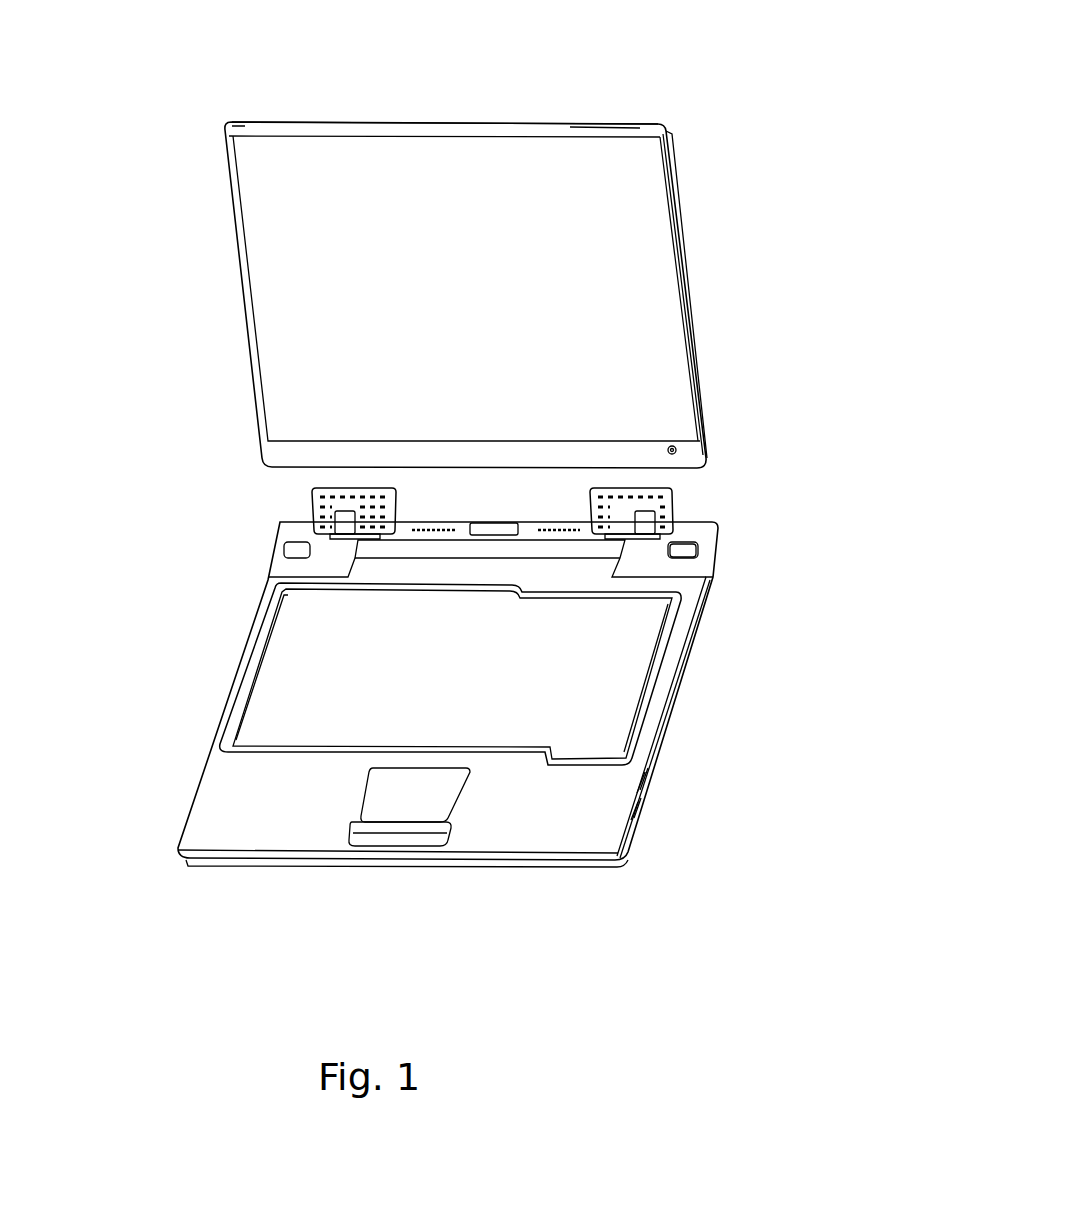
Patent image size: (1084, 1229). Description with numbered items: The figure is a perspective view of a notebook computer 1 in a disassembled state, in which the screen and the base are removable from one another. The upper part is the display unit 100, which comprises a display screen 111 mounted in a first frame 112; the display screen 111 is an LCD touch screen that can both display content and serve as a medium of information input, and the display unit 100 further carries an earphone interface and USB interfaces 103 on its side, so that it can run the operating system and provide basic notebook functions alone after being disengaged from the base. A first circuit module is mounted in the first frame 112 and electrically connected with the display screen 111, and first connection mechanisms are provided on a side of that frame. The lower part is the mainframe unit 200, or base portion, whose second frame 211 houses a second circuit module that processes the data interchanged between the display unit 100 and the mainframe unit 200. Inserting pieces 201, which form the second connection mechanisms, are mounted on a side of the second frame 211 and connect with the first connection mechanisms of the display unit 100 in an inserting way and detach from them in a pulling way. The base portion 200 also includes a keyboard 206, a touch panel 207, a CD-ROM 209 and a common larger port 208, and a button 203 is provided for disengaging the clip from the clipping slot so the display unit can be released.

The notebook computer 1 is at (188, 448).
The display unit 100 is at (225, 275).
The display screen 111 is at (595, 375).
The first frame 112 is at (485, 128).
The USB interfaces 103 is at (695, 400).
The mainframe unit 200 is at (185, 762).
The inserting piece 201 is at (650, 508).
The button 203 is at (695, 545).
The keyboard 206 is at (300, 672).
The touch panel 207 is at (400, 808).
The common larger port 208 is at (642, 795).
The CD-ROM 209 is at (670, 688).
The second frame 211 is at (545, 860).